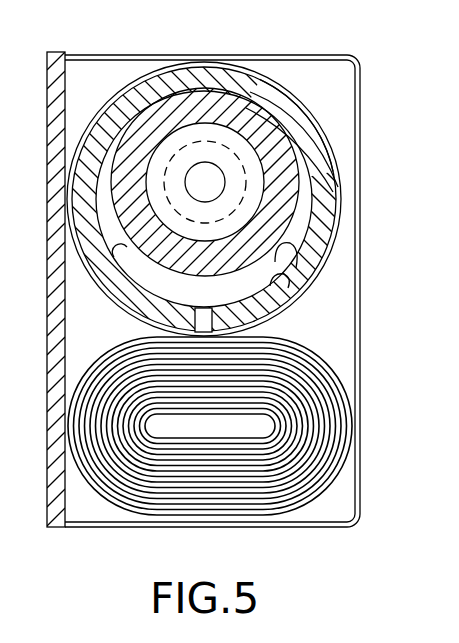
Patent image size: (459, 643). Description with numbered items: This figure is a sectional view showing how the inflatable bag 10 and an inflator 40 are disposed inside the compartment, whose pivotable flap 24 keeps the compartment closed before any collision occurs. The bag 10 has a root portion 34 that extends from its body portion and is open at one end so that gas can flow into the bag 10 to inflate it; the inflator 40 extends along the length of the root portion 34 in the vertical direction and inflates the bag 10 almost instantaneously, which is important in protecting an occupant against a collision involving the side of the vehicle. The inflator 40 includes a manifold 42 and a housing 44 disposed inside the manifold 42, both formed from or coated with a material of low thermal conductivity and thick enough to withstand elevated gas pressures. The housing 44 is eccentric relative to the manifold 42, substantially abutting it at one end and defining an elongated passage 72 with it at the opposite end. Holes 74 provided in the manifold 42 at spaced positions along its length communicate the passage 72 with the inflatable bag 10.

The inflatable bag 10 is at (344, 496).
The flap 24 is at (355, 458).
The root portion 34 is at (268, 66).
The inflator 40 is at (302, 309).
The manifold 42 is at (342, 190).
The housing 44 is at (263, 113).
The elongated passage 72 is at (297, 276).
The holes 74 is at (205, 313).